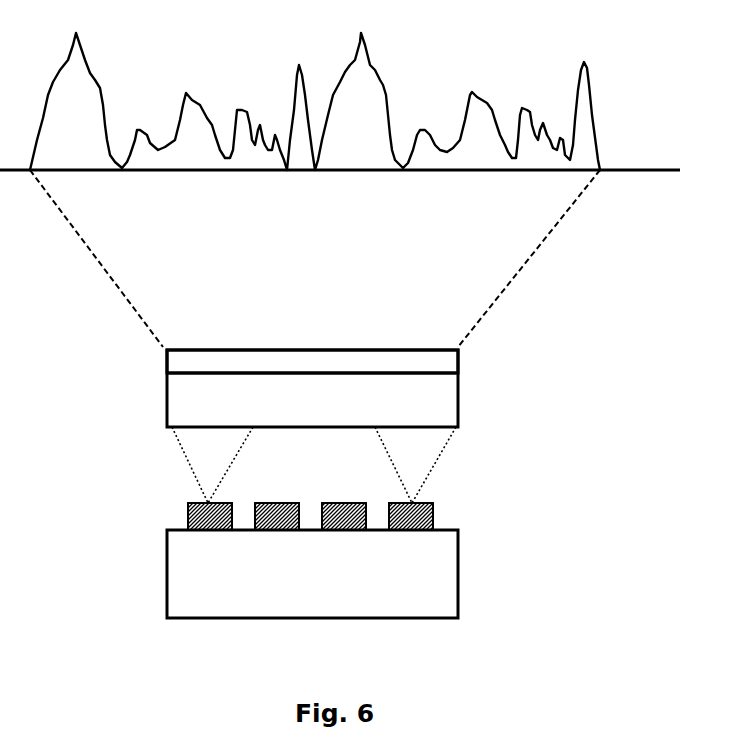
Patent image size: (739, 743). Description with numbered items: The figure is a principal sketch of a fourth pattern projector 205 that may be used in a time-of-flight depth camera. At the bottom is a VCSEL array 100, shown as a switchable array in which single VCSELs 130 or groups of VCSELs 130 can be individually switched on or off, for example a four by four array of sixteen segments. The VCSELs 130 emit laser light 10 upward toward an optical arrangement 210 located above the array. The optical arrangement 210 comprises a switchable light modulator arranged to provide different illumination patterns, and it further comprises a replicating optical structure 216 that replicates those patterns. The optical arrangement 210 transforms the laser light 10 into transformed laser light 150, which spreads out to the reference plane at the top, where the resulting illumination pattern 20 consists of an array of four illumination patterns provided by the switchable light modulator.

The illumination pattern 20 is at (599, 103).
The transformed laser light 150 is at (505, 292).
The optical arrangement 210 is at (148, 352).
The replicating optical structure 216 is at (459, 362).
The laser light 10 is at (433, 480).
The VCSELs 130 is at (188, 518).
The VCSEL array 100 is at (459, 565).
The pattern projector 205 is at (625, 350).